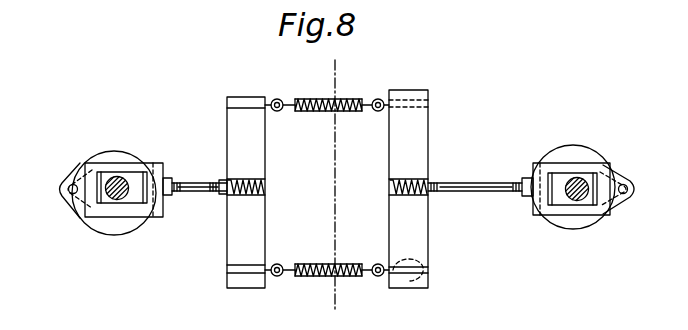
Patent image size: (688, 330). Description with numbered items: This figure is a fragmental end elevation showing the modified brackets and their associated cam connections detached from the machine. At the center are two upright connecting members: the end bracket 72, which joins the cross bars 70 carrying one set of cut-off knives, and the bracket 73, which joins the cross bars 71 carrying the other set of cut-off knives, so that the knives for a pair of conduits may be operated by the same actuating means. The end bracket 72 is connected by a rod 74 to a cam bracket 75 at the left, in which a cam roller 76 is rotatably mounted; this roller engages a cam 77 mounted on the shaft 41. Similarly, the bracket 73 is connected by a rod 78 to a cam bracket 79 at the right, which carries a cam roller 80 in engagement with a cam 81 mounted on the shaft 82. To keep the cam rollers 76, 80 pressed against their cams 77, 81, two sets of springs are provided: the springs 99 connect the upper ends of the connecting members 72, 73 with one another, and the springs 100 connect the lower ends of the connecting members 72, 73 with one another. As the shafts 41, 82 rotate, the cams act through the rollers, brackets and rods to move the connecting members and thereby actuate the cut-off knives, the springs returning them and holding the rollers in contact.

The shaft 41 is at (117, 176).
The cross bar 70 is at (278, 111).
The cross bar 71 is at (400, 90).
The end bracket 72 is at (226, 131).
The bracket 73 is at (418, 121).
The rod 74 is at (175, 192).
The cam bracket 75 is at (82, 163).
The cam roller 76 is at (66, 190).
The cam 77 is at (112, 160).
The rod 78 is at (478, 183).
The cam bracket 79 is at (618, 176).
The cam roller 80 is at (628, 193).
The cam 81 is at (563, 146).
The shaft 82 is at (572, 200).
The spring 99 is at (340, 112).
The spring 100 is at (325, 249).